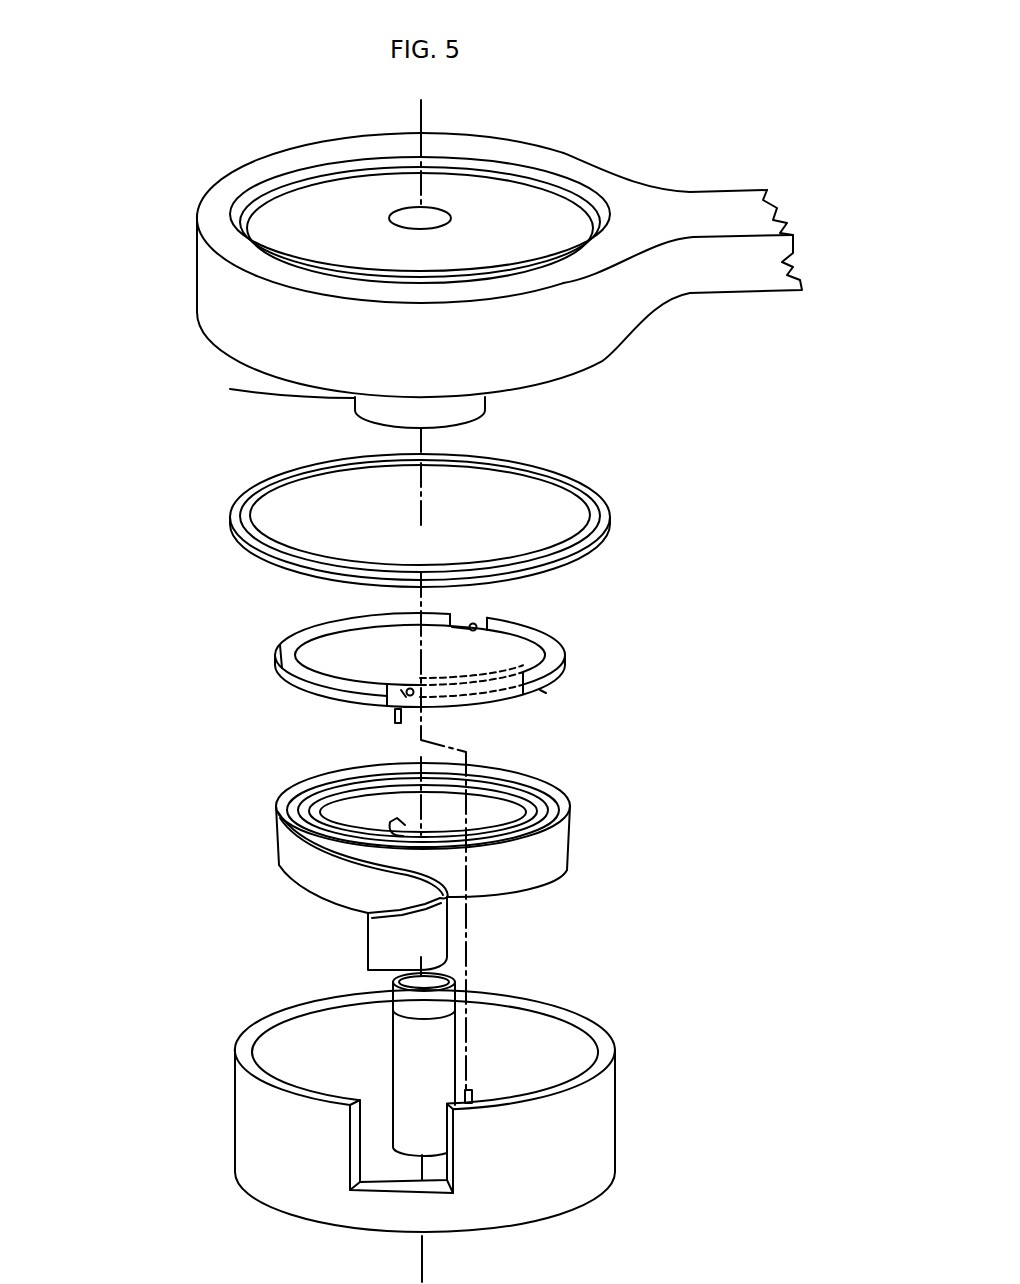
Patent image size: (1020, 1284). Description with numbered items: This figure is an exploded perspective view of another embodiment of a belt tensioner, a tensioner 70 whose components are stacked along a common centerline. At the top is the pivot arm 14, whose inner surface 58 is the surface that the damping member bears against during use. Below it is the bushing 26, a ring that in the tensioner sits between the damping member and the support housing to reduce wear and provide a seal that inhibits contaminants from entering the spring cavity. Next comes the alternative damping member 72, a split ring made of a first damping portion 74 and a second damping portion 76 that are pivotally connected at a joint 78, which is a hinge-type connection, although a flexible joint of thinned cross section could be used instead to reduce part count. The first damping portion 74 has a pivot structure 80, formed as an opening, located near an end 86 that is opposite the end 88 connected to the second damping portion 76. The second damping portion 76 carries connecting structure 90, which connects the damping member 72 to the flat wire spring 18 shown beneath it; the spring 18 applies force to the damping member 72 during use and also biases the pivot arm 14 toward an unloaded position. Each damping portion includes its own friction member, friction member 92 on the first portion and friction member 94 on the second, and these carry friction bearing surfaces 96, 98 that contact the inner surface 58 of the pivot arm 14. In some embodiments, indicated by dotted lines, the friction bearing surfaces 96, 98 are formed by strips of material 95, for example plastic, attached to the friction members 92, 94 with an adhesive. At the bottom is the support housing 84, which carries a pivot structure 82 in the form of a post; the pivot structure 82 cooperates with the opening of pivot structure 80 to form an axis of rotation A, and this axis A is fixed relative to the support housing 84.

The pivot arm 14 is at (633, 300).
The flat wire spring 18 is at (298, 865).
The bushing 26 is at (607, 497).
The inner surface 58 is at (244, 370).
The tensioner 70 is at (125, 283).
The damping member 72 is at (557, 685).
The first damping portion 74 is at (565, 657).
The second damping portion 76 is at (283, 657).
The joint 78 is at (473, 624).
The pivot structure 80 is at (410, 688).
The pivot structure 82 is at (477, 1094).
The support housing 84 is at (593, 1142).
The end 86 is at (406, 692).
The end 88 is at (477, 622).
The connecting structure 90 is at (390, 718).
The friction member 92 is at (540, 635).
The friction member 94 is at (323, 630).
The strips of material 95 is at (543, 693).
The friction bearing surface 96 is at (485, 693).
The friction bearing surface 98 is at (327, 680).
The axis of rotation A is at (473, 1090).